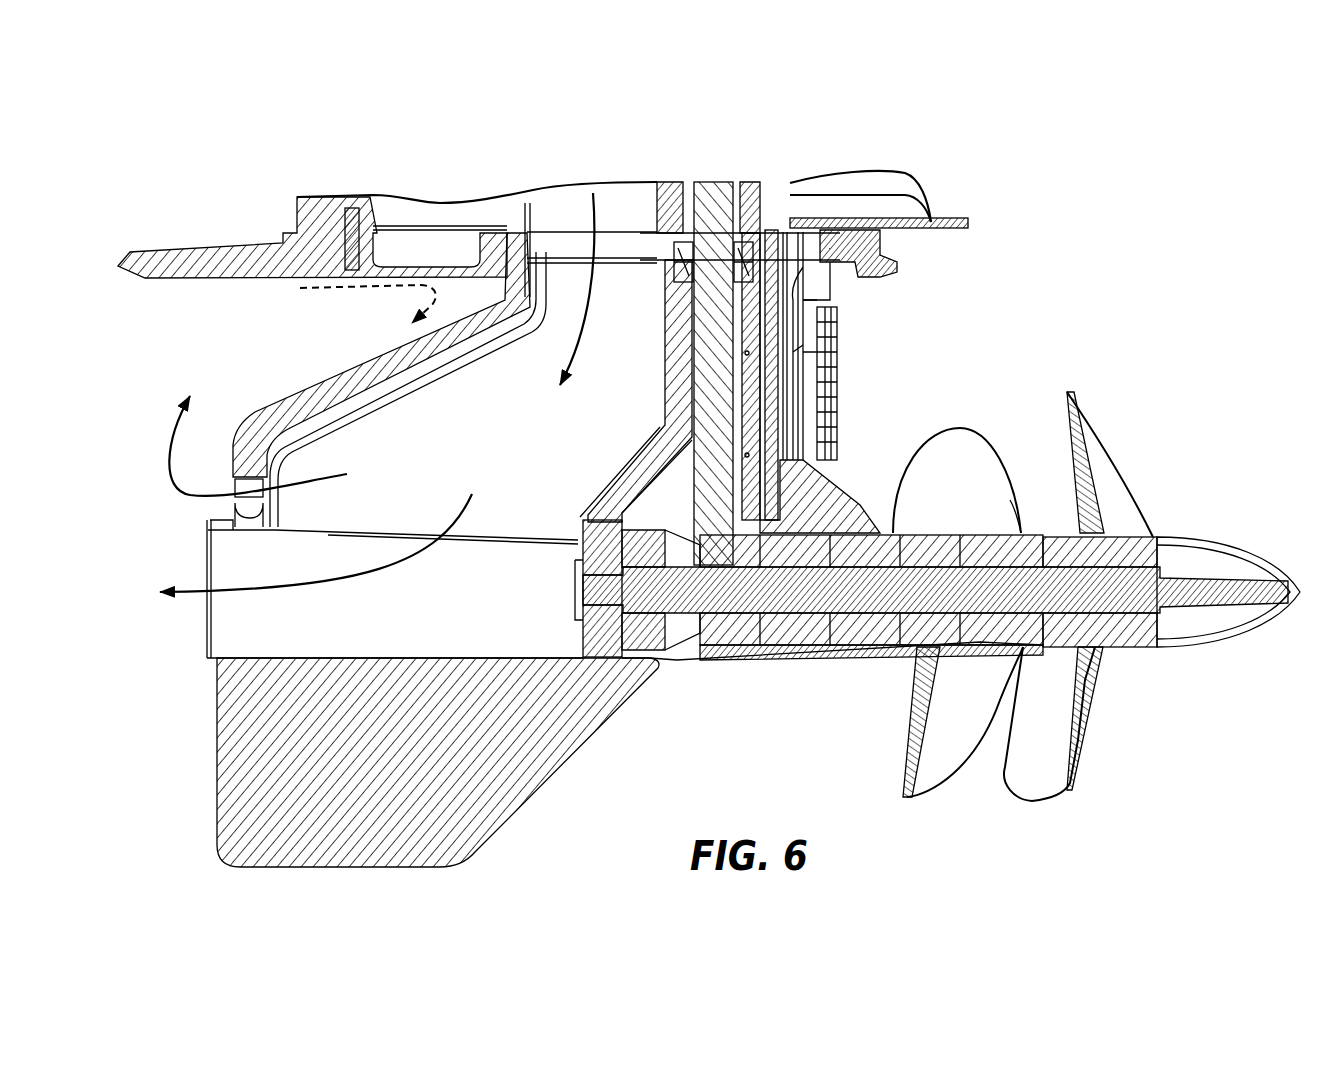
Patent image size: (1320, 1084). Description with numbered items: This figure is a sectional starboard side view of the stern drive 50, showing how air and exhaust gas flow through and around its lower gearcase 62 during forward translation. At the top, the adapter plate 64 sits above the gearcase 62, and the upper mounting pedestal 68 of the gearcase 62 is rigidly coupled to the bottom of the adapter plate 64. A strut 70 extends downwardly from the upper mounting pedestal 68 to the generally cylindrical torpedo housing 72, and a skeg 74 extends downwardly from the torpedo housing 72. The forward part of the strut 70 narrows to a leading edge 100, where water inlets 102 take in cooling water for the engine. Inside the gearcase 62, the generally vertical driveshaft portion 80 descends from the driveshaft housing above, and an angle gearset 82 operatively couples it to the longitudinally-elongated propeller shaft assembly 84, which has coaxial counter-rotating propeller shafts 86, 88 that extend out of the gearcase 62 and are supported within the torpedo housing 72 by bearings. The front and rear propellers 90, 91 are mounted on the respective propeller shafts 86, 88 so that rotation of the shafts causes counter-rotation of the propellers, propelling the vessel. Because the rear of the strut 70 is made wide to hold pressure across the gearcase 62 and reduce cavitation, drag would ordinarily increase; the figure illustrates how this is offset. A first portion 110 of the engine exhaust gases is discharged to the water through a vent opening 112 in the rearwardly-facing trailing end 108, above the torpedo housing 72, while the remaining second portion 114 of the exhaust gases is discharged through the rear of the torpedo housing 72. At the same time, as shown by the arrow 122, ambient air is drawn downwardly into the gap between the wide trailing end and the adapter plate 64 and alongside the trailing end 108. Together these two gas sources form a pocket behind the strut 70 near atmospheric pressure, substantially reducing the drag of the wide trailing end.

The stern drive 50 is at (1040, 190).
The adapter plate 64 is at (970, 226).
The upper mounting pedestal 68 is at (860, 293).
The vertical driveshaft portion 80 is at (738, 238).
The leading edge 100 is at (846, 358).
The water inlets 102 is at (843, 406).
The lower gearcase 62 is at (343, 430).
The trailing end 108 is at (347, 350).
The arrow 122 is at (398, 287).
The strut 70 is at (477, 429).
The first portion of the exhaust gases 110 is at (178, 472).
The vent opening 112 is at (205, 497).
The second portion of the exhaust gases 114 is at (335, 585).
The torpedo housing 72 is at (238, 645).
The skeg 74 is at (237, 826).
The angle gearset 82 is at (710, 628).
The propeller shaft 88 is at (830, 634).
The propeller shaft 86 is at (887, 618).
The propeller shaft assembly 84 is at (925, 636).
The rear propeller 91 is at (1003, 432).
The front propeller 90 is at (1160, 520).